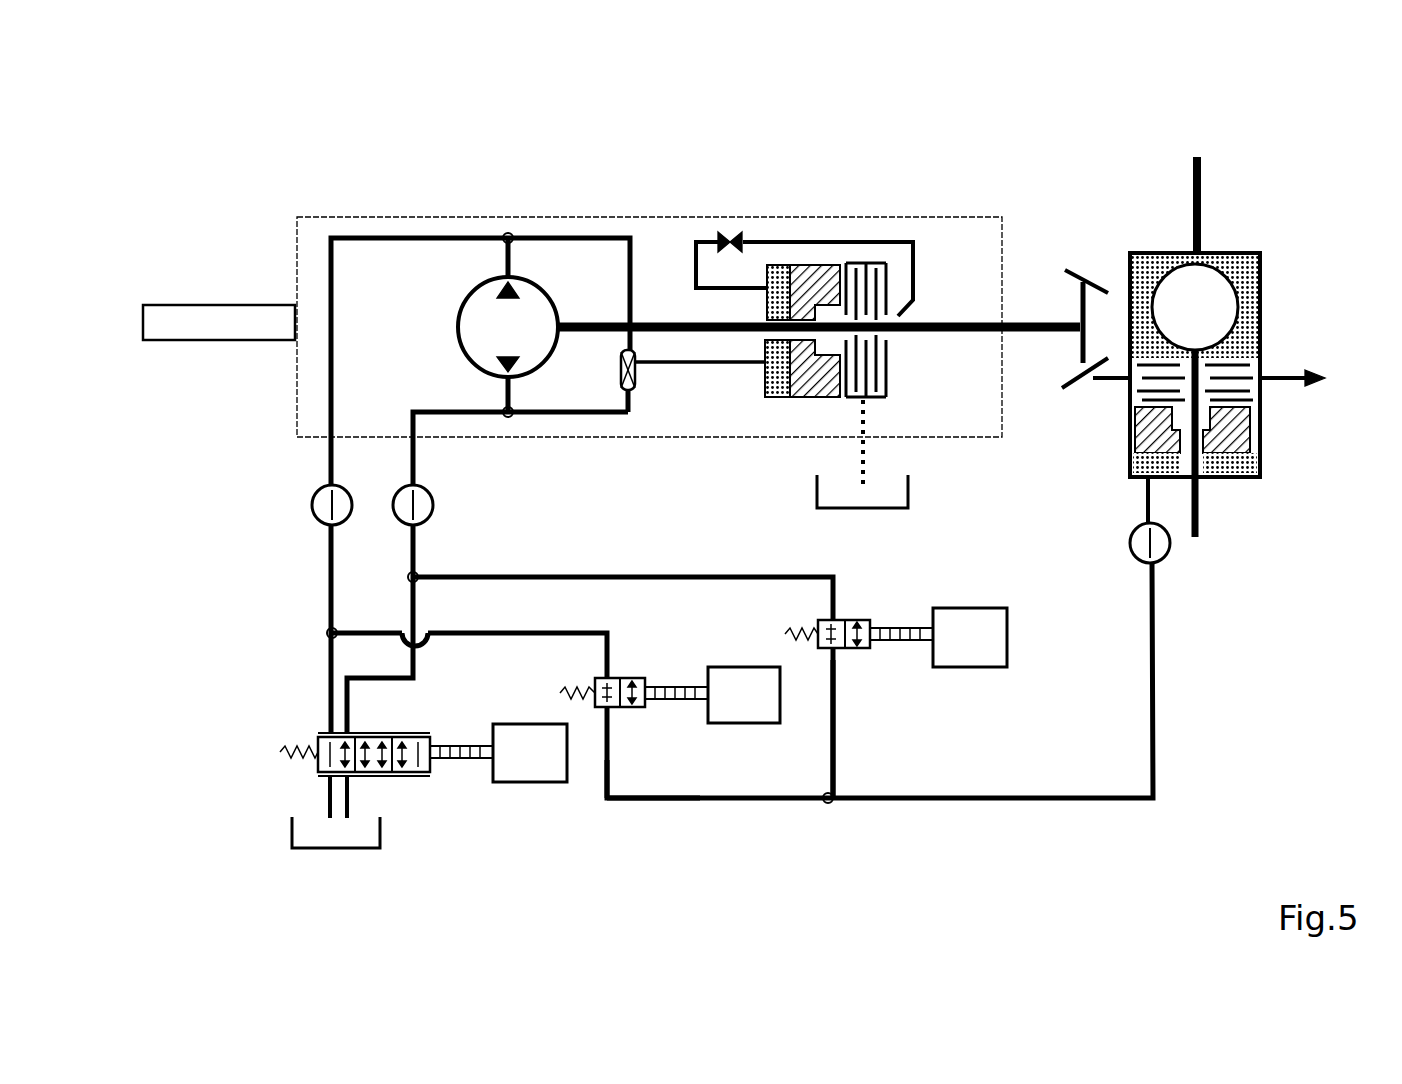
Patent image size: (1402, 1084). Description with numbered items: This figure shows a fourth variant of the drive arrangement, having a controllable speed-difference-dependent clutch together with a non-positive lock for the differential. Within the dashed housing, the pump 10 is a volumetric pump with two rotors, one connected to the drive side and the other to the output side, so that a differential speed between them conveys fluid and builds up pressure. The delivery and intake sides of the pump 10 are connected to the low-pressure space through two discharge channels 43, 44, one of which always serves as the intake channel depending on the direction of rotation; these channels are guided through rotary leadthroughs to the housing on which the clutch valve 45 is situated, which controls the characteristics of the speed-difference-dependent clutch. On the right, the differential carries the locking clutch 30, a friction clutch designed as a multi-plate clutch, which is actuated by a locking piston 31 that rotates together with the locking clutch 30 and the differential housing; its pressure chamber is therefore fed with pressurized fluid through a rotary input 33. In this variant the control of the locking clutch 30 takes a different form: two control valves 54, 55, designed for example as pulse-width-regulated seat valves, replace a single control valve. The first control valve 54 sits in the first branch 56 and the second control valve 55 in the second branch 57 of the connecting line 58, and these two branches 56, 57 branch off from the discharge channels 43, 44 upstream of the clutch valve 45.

The pump 10 is at (508, 327).
The locking clutch 30 is at (1264, 347).
The locking piston 31 is at (1243, 440).
The rotary input 33 is at (1153, 548).
The discharge channel 43 is at (325, 455).
The discharge channel 44 is at (413, 545).
The clutch valve 45 is at (332, 757).
The first control valve 54 is at (753, 702).
The second control valve 55 is at (985, 648).
The first branch 56 is at (640, 800).
The second branch 57 is at (827, 733).
The connecting line 58 is at (962, 800).